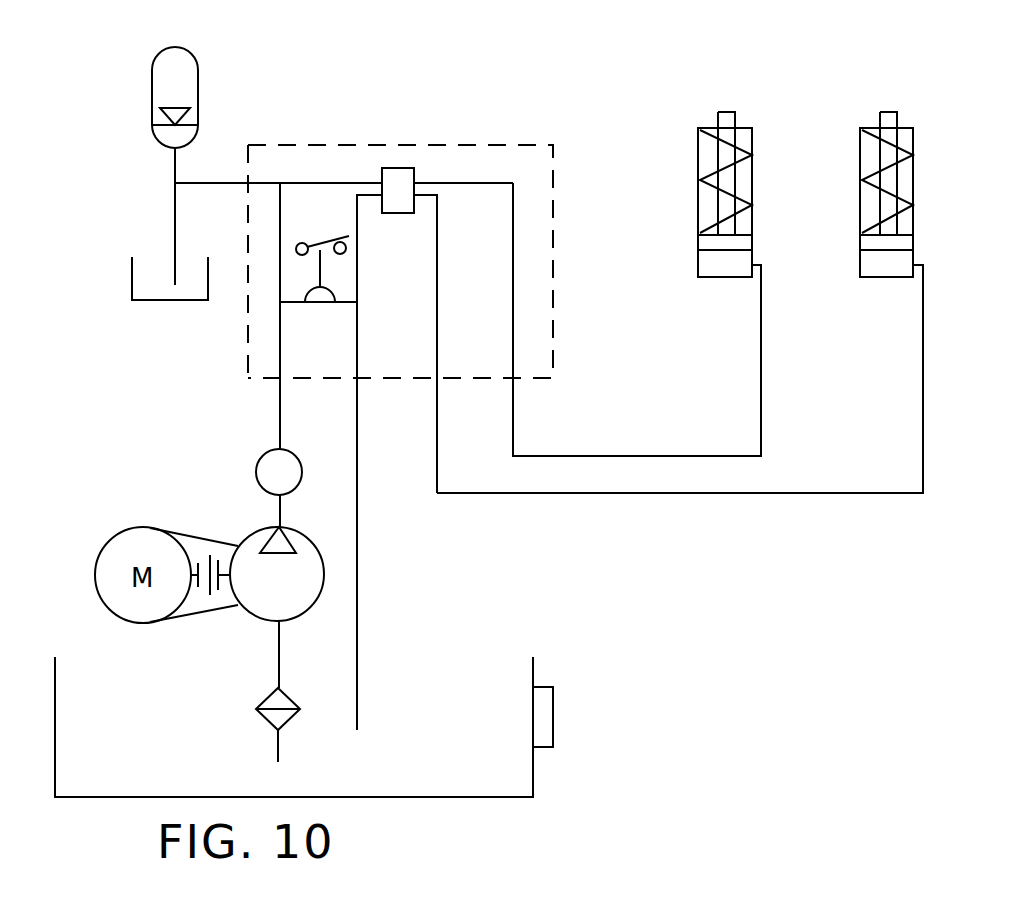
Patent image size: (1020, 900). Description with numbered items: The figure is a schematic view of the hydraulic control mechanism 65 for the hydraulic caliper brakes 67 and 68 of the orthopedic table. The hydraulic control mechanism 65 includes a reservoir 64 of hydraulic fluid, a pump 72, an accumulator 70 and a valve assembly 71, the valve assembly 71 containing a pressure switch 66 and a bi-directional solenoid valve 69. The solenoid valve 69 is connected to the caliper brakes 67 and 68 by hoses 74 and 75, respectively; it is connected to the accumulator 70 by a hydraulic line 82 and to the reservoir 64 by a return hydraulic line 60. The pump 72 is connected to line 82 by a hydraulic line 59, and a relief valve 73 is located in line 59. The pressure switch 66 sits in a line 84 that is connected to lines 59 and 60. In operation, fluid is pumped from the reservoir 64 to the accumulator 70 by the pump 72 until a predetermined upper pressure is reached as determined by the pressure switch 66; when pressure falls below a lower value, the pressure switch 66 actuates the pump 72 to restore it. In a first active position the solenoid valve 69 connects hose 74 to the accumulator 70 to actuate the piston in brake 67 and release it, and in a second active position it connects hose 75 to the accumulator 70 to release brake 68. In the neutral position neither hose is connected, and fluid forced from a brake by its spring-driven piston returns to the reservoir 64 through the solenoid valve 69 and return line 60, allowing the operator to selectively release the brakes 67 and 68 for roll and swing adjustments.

The hydraulic line 59 is at (278, 413).
The return hydraulic line 60 is at (357, 545).
The reservoir 64 is at (533, 765).
The hydraulic control mechanism 65 is at (300, 98).
The pressure switch 66 is at (335, 285).
The hydraulic caliper brake 67 is at (688, 122).
The hydraulic caliper brake 68 is at (855, 122).
The bi-directional solenoid valve 69 is at (404, 160).
The accumulator 70 is at (197, 119).
The valve assembly 71 is at (245, 350).
The pump 72 is at (318, 592).
The relief valve 73 is at (257, 470).
The hose 74 is at (657, 455).
The hose 75 is at (688, 495).
The hydraulic line 82 is at (217, 170).
The line 84 is at (348, 303).